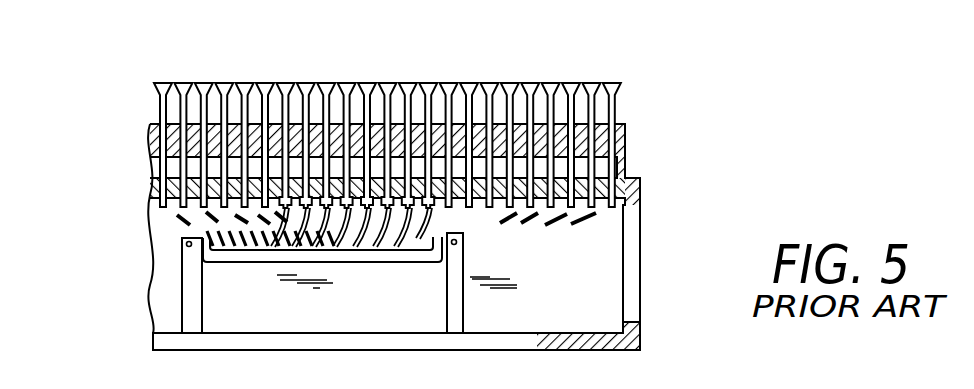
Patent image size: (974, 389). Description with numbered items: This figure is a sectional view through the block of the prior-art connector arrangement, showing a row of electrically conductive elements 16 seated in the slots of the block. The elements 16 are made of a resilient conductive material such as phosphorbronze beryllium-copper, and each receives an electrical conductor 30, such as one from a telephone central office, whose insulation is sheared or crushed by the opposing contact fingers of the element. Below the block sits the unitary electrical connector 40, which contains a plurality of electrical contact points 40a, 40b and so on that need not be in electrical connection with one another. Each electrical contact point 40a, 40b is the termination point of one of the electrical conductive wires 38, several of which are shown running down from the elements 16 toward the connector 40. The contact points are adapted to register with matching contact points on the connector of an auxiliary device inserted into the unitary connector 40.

The electrically conductive elements 16 is at (625, 126).
The electrical conductor 30 is at (618, 128).
The electrical conductive wires 38 is at (530, 226).
The unitary electrical connector 40 is at (266, 250).
The electrical contact point 40a is at (421, 264).
The electrical contact point 40b is at (397, 267).